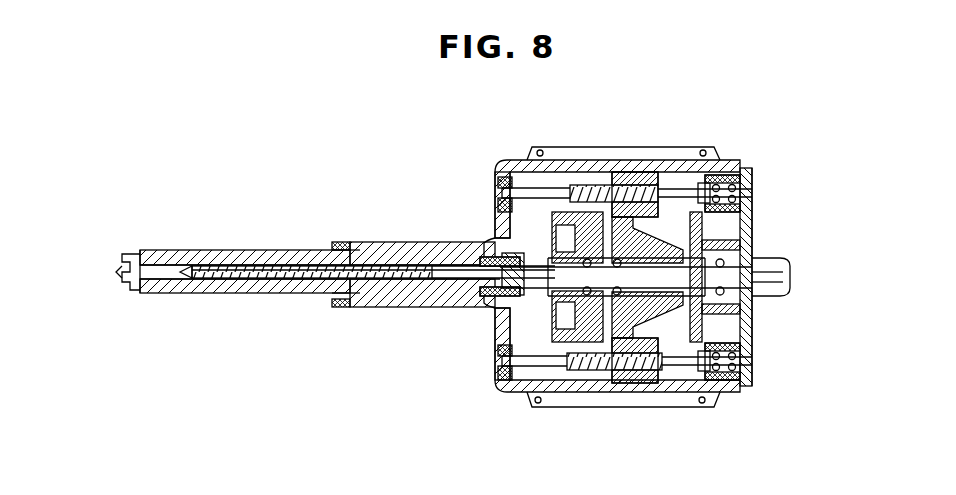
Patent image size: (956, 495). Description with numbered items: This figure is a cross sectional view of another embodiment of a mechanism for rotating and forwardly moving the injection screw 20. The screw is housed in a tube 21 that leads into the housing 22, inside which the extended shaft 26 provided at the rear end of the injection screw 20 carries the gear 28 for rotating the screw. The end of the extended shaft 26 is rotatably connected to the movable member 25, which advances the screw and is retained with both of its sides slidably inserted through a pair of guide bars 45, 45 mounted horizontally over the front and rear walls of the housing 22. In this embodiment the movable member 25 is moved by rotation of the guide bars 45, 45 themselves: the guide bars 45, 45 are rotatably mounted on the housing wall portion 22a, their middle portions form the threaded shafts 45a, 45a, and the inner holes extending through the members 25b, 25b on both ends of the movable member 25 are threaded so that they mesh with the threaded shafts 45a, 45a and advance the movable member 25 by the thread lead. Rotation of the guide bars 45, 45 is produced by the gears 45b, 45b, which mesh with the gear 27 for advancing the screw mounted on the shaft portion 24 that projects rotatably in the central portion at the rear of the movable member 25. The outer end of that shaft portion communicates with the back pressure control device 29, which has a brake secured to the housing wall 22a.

The injection screw 20 is at (300, 264).
The tube 21 is at (243, 250).
The housing 22 is at (568, 160).
The housing wall 22a is at (502, 218).
The shaft portion 24 is at (748, 318).
The movable member 25 is at (705, 250).
The members 25b is at (642, 172).
The extended shaft 26 is at (506, 307).
The gear for advancing the screw 27 is at (738, 220).
The gear for rotating the screw 28 is at (552, 215).
The back pressure control device 29 is at (780, 290).
The guide bars 45 is at (536, 188).
The threaded shafts 45a is at (622, 172).
The gears 45b is at (713, 158).